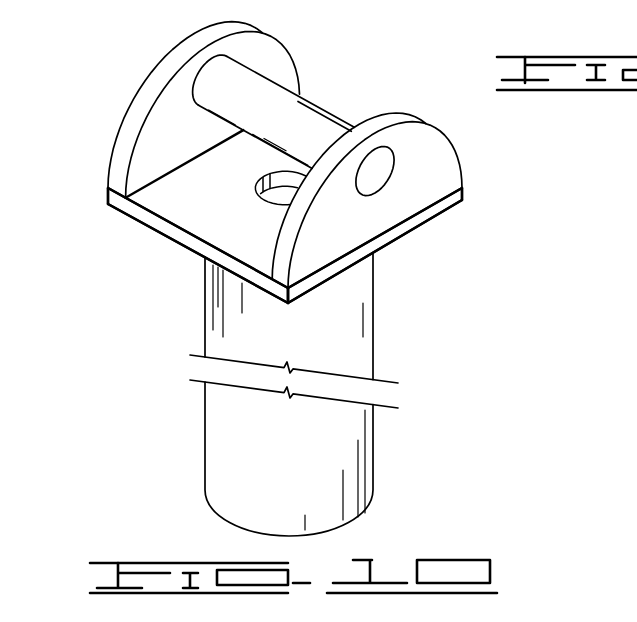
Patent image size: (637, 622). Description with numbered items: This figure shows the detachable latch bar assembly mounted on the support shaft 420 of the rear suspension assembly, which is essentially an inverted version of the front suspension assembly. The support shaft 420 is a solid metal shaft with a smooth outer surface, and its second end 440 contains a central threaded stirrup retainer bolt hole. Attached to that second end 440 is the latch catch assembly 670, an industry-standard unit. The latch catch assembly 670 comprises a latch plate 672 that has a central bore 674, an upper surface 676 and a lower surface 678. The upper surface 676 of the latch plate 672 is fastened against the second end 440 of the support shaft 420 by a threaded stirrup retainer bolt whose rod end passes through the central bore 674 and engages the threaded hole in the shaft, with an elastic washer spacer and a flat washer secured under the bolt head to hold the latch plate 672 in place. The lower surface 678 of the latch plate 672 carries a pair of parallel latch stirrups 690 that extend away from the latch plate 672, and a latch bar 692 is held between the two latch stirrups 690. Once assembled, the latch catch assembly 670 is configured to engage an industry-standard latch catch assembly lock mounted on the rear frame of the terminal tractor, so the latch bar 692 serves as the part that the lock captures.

The support shaft 420 is at (295, 394).
The second end 440 is at (375, 343).
The latch catch assembly 670 is at (337, 231).
The latch plate 672 is at (393, 237).
The central bore 674 is at (258, 186).
The upper surface 676 is at (193, 253).
The lower surface 678 is at (205, 167).
The latch stirrups 690 is at (432, 147).
The latch bar 692 is at (253, 87).